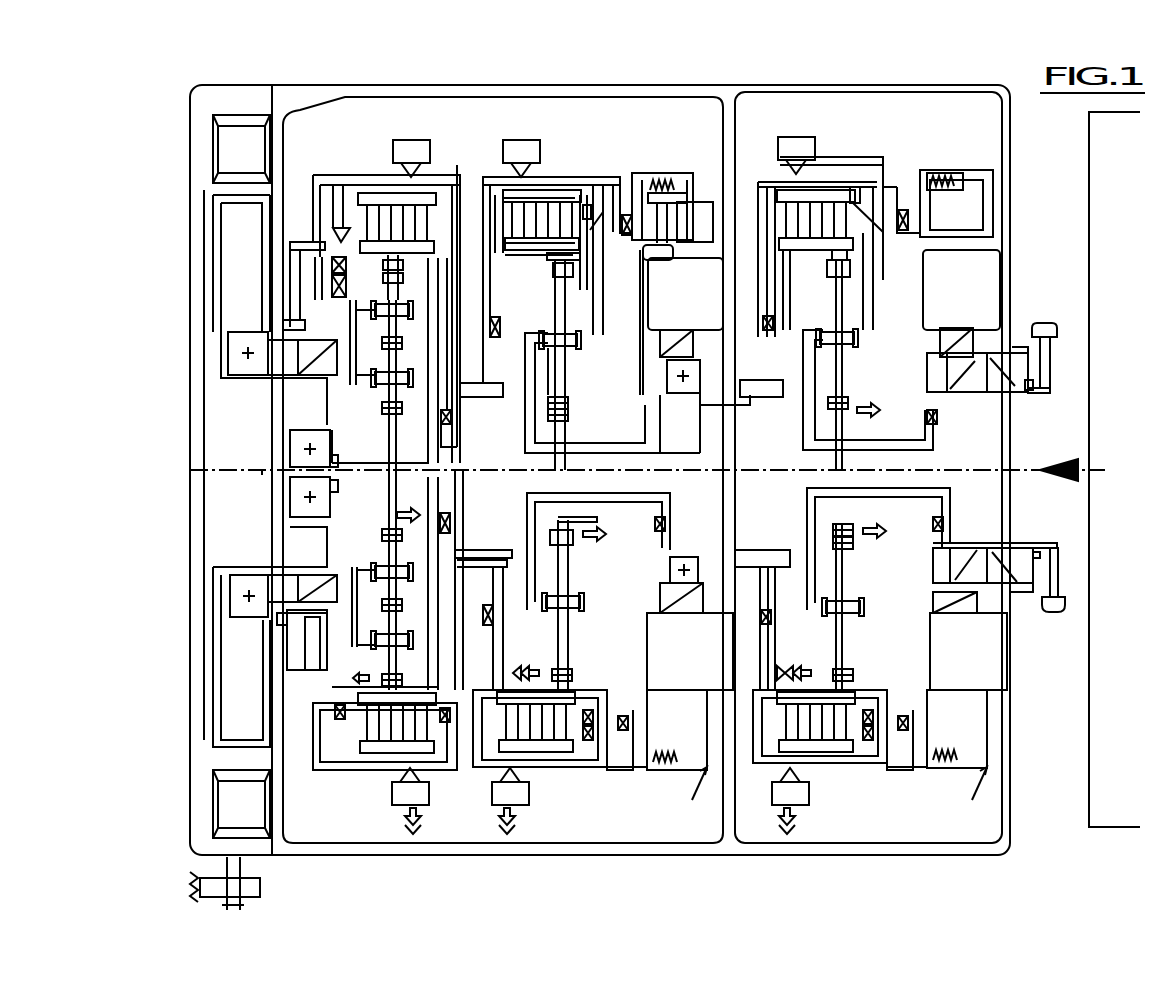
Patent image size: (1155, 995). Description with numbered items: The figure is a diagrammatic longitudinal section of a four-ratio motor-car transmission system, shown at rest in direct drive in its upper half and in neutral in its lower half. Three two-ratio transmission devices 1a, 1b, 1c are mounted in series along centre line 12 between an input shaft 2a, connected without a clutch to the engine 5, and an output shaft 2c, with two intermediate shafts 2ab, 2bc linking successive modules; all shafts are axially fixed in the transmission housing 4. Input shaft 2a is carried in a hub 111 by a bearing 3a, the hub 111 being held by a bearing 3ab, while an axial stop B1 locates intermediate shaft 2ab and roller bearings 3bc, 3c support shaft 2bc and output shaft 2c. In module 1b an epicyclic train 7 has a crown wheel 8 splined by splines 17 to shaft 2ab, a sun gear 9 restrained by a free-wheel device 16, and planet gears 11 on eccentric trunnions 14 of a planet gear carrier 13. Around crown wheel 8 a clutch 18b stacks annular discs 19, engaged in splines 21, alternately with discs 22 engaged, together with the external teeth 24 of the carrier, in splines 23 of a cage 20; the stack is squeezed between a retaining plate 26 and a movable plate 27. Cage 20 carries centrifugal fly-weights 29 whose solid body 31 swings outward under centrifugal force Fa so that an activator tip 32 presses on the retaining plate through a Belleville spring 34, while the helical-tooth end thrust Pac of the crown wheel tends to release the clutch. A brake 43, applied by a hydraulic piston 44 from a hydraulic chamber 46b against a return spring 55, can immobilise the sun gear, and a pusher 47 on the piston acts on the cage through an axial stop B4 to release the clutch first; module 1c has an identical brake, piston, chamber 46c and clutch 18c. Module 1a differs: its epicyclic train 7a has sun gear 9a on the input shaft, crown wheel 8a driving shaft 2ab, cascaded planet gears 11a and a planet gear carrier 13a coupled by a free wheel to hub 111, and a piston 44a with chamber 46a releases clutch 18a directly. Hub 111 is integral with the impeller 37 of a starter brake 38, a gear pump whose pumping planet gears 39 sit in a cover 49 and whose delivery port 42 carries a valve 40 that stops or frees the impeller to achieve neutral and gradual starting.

The first transmission device 1a is at (354, 144).
The second transmission device 1b is at (572, 148).
The third transmission device 1c is at (850, 151).
The input shaft 2a is at (717, 470).
The intermediate shaft 2ab is at (472, 395).
The intermediate shaft 2bc is at (694, 402).
The output shaft 2c is at (985, 410).
The bearing 3a is at (290, 451).
The bearing 3ab is at (254, 376).
The roller bearing 3bc is at (700, 376).
The roller bearing 3c is at (1030, 376).
The transmission housing 4 is at (630, 85).
The engine 5 is at (1115, 163).
The epicyclic train 7 is at (592, 368).
The epicyclic train 7a is at (359, 395).
The crown wheel 8 is at (554, 264).
The crown wheel 8a is at (394, 268).
The sun gear 9 is at (568, 418).
The sun gear 9a is at (390, 426).
The planet gears 11 is at (560, 365).
The planet gears 11a is at (392, 308).
The centre line 12 is at (264, 474).
The planet gear carrier 13 is at (525, 425).
The planet gear carrier 13a is at (362, 568).
The eccentric trunnions 14 is at (553, 333).
The free-wheel device 16 is at (678, 338).
The splines 17 is at (478, 375).
The clutch 18a is at (370, 212).
The clutch 18b is at (495, 193).
The clutch 18c is at (820, 728).
The annular discs 19 is at (528, 245).
The cage 20 is at (626, 208).
The splines 21 is at (540, 263).
The annular discs 22 is at (493, 185).
The splines 23 is at (548, 255).
The external teeth 24 is at (586, 203).
The retaining plate 26 is at (538, 248).
The movable plate 27 is at (500, 225).
The centrifugal fly-weights 29 is at (512, 138).
The solid body 31 is at (521, 157).
The activator tip 32 is at (589, 232).
The Belleville spring 34 is at (344, 713).
The impeller 37 is at (216, 284).
The starter brake 38 is at (240, 83).
The pumping planet gears 39 is at (245, 150).
The valve 40 is at (253, 882).
The delivery port 42 is at (243, 905).
The brake 43 is at (824, 290).
The hydraulic piston 44 is at (728, 216).
The piston 44a is at (308, 310).
The hydraulic chamber 46a is at (305, 645).
The hydraulic chamber 46b is at (700, 690).
The hydraulic chamber 46c is at (1010, 240).
The pusher 47 is at (940, 180).
The cover 49 is at (195, 513).
The return spring 55 is at (342, 295).
The hub 111 is at (252, 378).
The axial stop B1 is at (460, 434).
The axial stop B4 is at (826, 323).
The end thrust Pac is at (587, 660).
The centrifugal force Fa is at (615, 821).